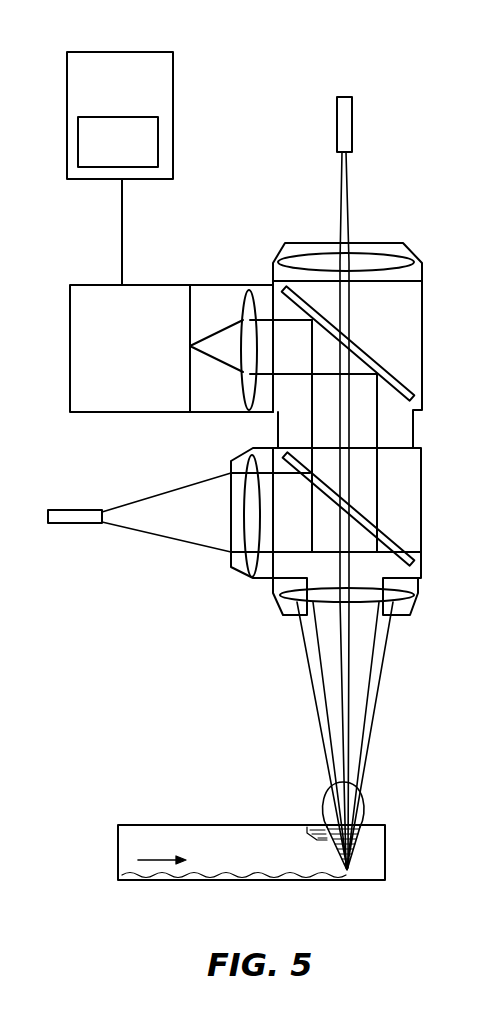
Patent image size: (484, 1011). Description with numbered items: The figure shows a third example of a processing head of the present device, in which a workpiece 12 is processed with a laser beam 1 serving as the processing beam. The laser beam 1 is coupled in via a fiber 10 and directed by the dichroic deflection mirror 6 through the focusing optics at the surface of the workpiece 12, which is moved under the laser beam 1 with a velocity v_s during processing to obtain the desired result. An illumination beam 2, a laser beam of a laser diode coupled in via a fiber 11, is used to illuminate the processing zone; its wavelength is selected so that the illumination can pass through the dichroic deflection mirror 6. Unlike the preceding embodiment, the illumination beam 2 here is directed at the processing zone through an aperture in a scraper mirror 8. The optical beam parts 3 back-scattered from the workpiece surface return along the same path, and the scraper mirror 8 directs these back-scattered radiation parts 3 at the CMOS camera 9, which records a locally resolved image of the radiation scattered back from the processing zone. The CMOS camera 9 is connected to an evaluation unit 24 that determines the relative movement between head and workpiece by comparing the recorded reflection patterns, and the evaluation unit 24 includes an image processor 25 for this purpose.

The laser beam 1 is at (303, 643).
The illumination beam 2 is at (340, 198).
The back-scattered optical beam parts 3 is at (285, 330).
The dichroic deflection mirror 6 is at (365, 515).
The scraper mirror 8 is at (372, 358).
The CMOS camera 9 is at (92, 323).
The fiber 10 is at (85, 525).
The fiber 11 is at (353, 128).
The workpiece 12 is at (377, 857).
The evaluation unit 24 is at (150, 77).
The image processor 25 is at (126, 163).